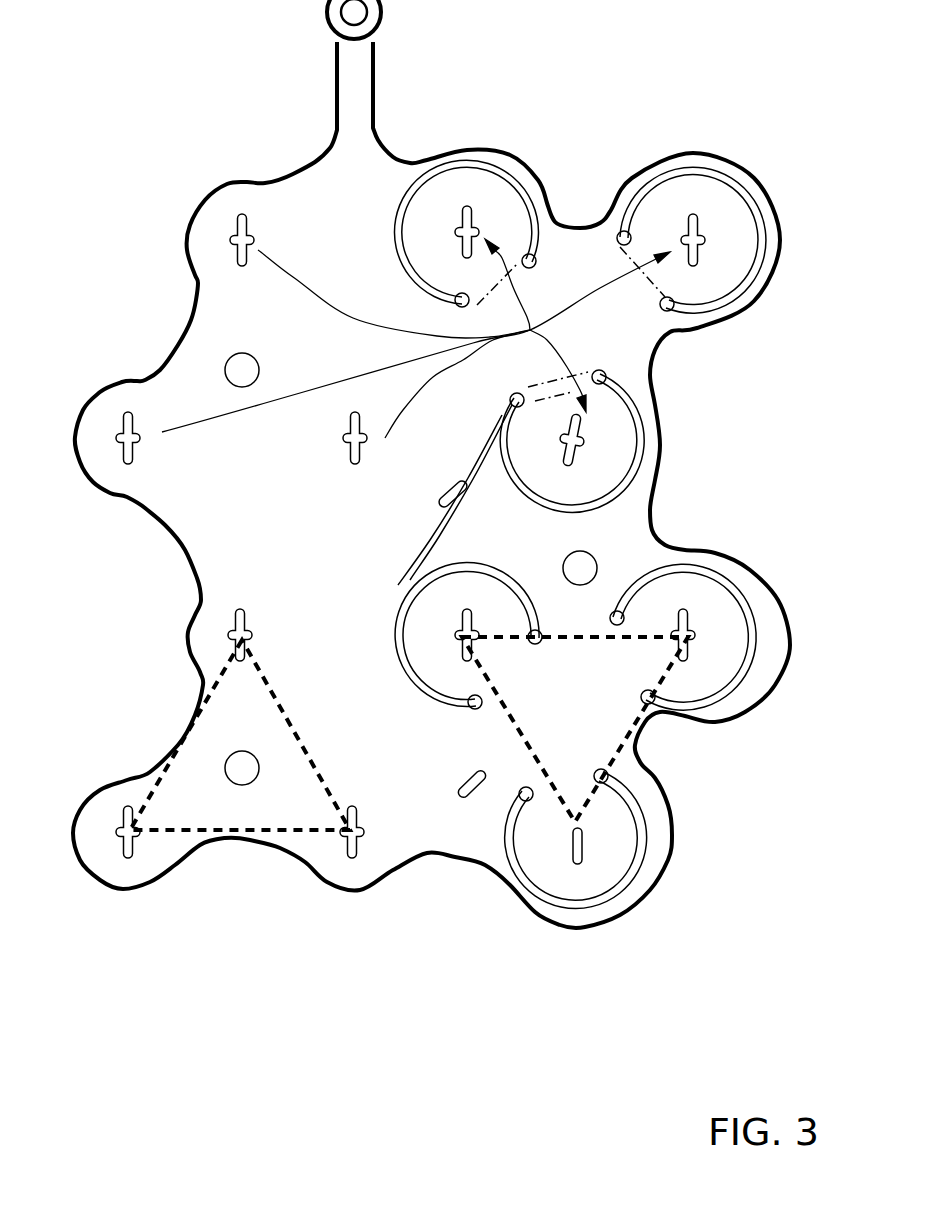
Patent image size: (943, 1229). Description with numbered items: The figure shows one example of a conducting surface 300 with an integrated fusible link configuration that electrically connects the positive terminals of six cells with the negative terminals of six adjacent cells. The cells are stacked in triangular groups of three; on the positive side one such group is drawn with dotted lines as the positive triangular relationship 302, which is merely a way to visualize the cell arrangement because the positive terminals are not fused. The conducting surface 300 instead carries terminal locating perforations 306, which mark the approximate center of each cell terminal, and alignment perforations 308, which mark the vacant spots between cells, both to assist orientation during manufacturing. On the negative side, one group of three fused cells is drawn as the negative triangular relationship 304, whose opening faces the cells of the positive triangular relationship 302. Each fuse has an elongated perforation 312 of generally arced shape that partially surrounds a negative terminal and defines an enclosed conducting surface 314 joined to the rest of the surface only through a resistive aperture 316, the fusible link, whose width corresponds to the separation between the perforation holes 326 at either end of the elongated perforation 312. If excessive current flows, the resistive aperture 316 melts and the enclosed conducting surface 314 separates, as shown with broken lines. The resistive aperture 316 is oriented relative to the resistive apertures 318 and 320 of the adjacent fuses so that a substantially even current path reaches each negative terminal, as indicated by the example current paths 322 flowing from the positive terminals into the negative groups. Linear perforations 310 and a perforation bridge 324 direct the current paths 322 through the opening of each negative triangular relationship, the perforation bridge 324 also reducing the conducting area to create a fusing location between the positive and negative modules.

The conducting surface 300 is at (140, 103).
The positive triangular relationship 302 is at (222, 670).
The negative triangular relationship 304 is at (626, 758).
The terminal locating perforation 306 is at (237, 240).
The alignment perforation 308 is at (242, 785).
The linear perforation 310 is at (477, 785).
The elongated perforation 312 is at (747, 195).
The enclosed conducting surface 314 is at (745, 259).
The resistive aperture 316 is at (659, 272).
The resistive aperture 318 is at (502, 256).
The resistive aperture 320 is at (590, 384).
The current path 322 is at (217, 417).
The perforation bridge 324 is at (482, 517).
The perforation hole 326 is at (614, 222).